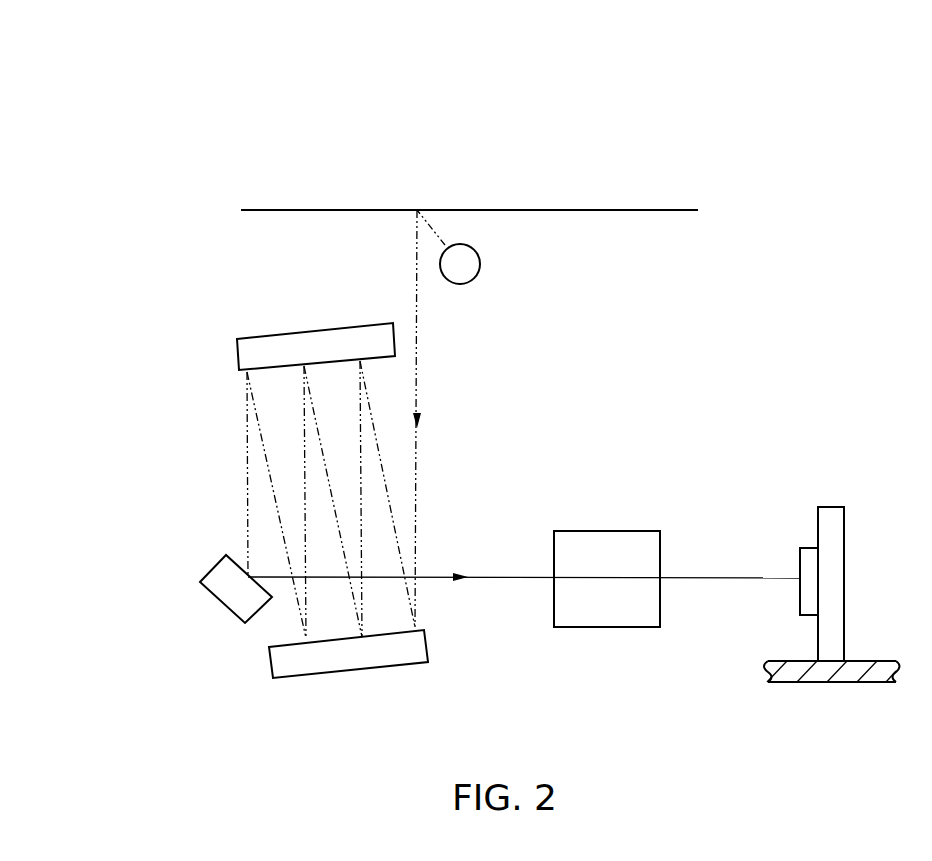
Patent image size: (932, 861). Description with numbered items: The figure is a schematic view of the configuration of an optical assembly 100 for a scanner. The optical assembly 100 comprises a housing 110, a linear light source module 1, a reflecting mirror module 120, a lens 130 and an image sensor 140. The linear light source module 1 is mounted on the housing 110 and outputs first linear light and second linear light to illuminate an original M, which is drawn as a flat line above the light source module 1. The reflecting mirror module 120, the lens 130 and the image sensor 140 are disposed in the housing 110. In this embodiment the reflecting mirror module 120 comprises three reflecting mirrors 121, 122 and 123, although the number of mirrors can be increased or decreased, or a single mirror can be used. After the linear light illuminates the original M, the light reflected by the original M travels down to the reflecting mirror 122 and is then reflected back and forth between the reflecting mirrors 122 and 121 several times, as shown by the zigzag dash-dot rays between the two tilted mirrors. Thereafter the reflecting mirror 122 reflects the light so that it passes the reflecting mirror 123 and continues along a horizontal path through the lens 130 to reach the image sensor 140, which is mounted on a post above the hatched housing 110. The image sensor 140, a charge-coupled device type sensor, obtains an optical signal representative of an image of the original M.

The optical assembly 100 is at (521, 57).
The original M is at (662, 210).
The linear light source module 1 is at (481, 268).
The reflecting mirror module 120 is at (113, 158).
The reflecting mirror 121 is at (307, 345).
The reflecting mirror 122 is at (384, 650).
The reflecting mirror 123 is at (218, 587).
The lens 130 is at (610, 540).
The image sensor 140 is at (807, 553).
The housing 110 is at (768, 671).